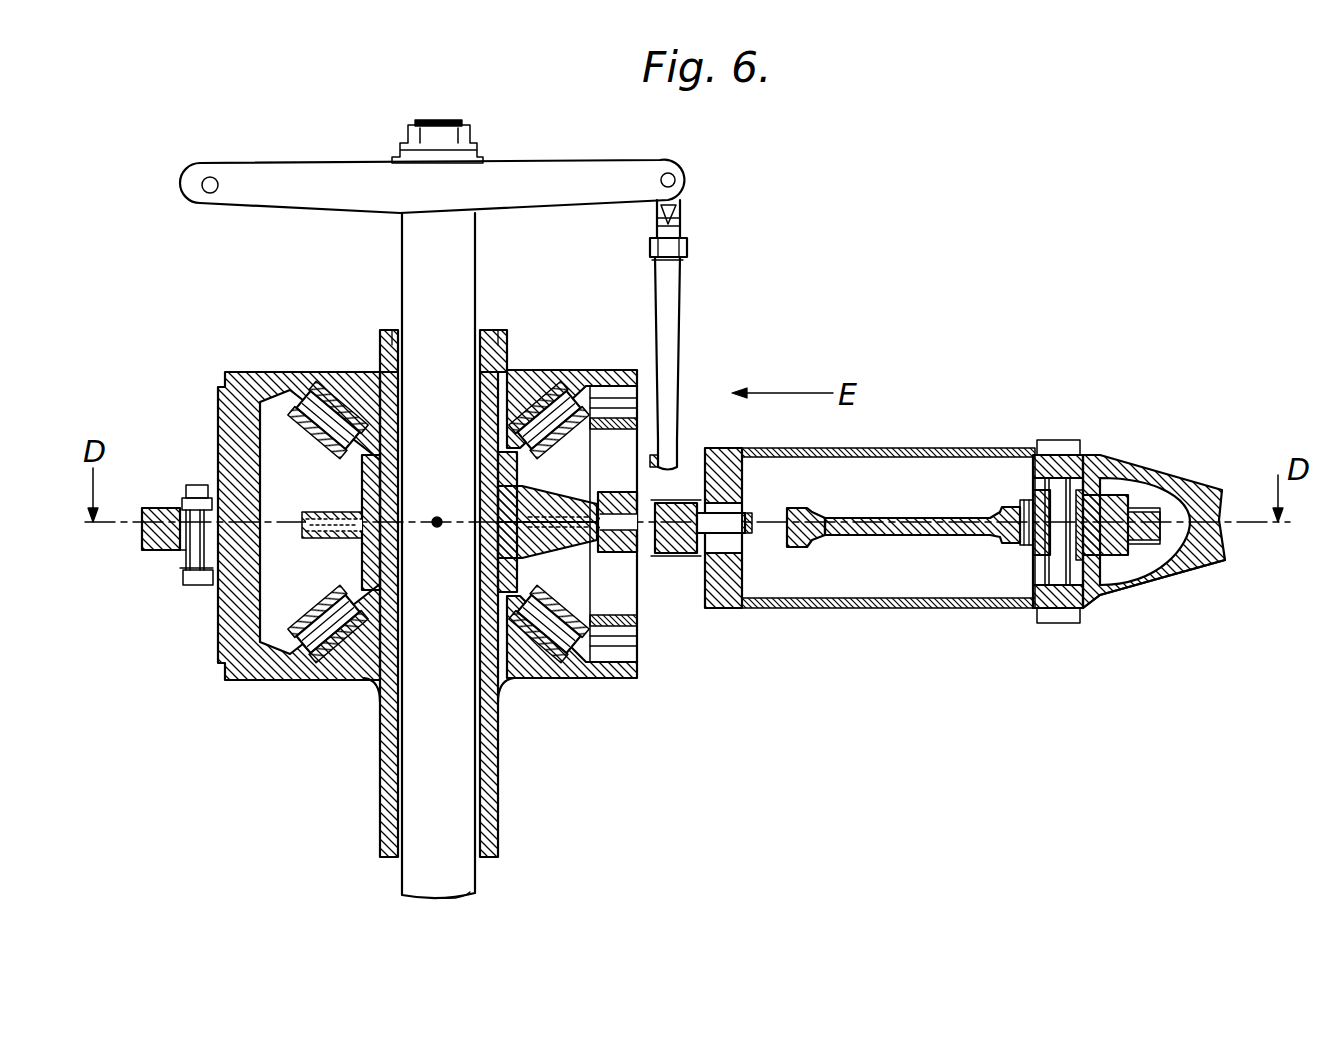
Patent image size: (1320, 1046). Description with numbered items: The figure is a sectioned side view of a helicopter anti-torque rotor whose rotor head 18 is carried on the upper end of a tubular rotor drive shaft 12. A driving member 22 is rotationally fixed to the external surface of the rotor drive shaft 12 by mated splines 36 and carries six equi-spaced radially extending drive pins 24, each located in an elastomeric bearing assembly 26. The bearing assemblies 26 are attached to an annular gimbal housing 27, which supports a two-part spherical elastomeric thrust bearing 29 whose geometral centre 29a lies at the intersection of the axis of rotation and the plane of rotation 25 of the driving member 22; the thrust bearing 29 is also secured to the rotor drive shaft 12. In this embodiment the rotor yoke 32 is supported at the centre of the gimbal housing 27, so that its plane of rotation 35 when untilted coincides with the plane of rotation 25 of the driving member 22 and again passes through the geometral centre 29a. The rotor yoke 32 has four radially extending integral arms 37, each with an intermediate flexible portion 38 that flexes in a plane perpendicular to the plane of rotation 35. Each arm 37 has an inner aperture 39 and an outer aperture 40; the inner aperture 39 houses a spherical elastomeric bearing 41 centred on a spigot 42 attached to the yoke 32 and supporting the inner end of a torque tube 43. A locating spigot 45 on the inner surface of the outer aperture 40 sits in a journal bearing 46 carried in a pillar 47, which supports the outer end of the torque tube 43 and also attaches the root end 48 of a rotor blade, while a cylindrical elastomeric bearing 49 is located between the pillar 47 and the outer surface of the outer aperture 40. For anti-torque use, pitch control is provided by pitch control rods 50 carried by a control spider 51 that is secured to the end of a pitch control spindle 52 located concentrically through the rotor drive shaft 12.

The rotor drive shaft 12 is at (512, 356).
The rotor head 18 is at (397, 580).
The driving member 22 is at (530, 512).
The drive pins 24 is at (620, 662).
The plane of rotation 25 is at (1175, 580).
The elastomeric bearing assembly 26 is at (668, 422).
The gimbal housing 27 is at (228, 415).
The spherical elastomeric thrust bearing 29 is at (330, 398).
The geometral centre 29a is at (437, 528).
The rotor yoke 32 is at (680, 555).
The plane of rotation 35 is at (1165, 620).
The mated splines 36 is at (540, 548).
The arms 37 is at (1150, 518).
The intermediate flexible portion 38 is at (898, 525).
The inner aperture 39 is at (793, 512).
The outer aperture 40 is at (1033, 515).
The spherical elastomeric bearing 41 is at (748, 500).
The spigot 42 is at (752, 548).
The torque tube 43 is at (908, 450).
The locating spigot 45 is at (1050, 488).
The journal bearing 46 is at (1030, 545).
The pillar 47 is at (1085, 492).
The root end 48 is at (1195, 512).
The cylindrical elastomeric bearing 49 is at (1105, 558).
The pitch control rods 50 is at (663, 286).
The control spider 51 is at (548, 176).
The pitch control spindle 52 is at (458, 257).